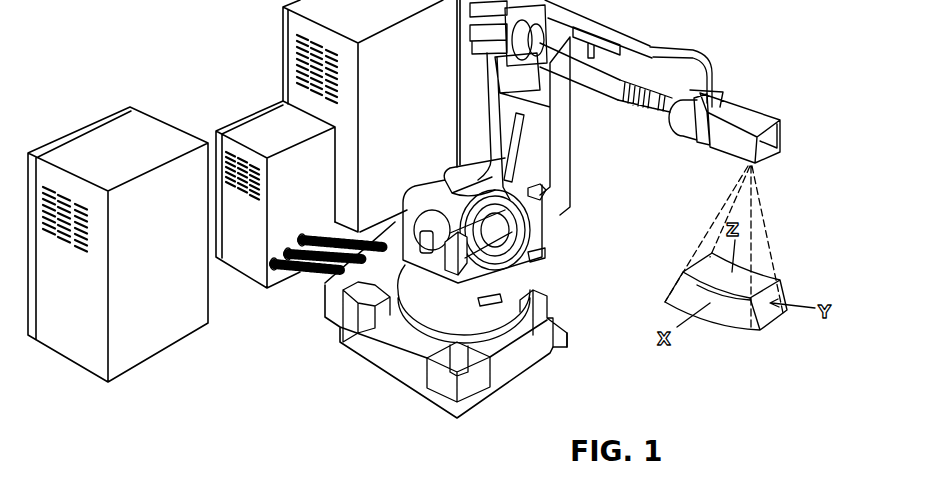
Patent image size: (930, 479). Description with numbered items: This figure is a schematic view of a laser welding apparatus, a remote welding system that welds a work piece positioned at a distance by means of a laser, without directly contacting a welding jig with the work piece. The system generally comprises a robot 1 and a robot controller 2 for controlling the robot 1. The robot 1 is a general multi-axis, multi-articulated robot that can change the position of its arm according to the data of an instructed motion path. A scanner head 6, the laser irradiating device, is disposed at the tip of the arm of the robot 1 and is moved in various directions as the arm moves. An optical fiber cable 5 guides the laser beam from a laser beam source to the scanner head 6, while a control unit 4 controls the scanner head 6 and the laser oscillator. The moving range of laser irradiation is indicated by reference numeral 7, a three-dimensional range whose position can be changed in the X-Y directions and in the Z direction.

The robot 1 is at (558, 163).
The robot controller 2 is at (247, 129).
The control unit 4 is at (160, 129).
The optical fiber cable 5 is at (653, 45).
The scanner head 6 is at (750, 112).
The moving range of laser irradiation 7 is at (725, 313).